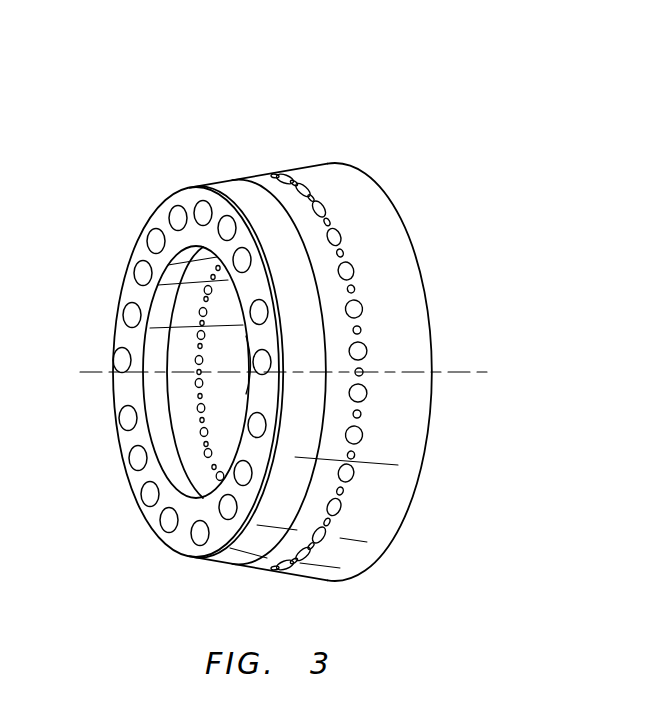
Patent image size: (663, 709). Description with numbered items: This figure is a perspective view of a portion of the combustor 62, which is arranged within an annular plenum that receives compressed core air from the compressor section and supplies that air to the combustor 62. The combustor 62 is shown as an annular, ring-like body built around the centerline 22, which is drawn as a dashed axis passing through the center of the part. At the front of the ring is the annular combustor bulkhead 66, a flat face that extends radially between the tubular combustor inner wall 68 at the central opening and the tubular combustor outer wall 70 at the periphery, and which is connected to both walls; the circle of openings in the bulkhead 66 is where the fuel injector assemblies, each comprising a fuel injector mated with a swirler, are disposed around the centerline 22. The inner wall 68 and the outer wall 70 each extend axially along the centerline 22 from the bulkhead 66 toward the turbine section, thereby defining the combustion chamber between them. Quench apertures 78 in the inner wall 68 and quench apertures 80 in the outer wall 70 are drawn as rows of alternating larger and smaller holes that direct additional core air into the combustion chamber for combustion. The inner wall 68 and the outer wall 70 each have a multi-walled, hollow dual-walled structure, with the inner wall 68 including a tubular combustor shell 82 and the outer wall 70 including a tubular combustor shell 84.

The centerline 22 is at (482, 372).
The combustor 62 is at (370, 176).
The annular combustor bulkhead 66 is at (131, 260).
The tubular combustor inner wall 68 is at (166, 438).
The tubular combustor outer wall 70 is at (383, 218).
The quench apertures 78 is at (195, 361).
The quench apertures 80 is at (360, 306).
The tubular combustor shell 82 is at (172, 467).
The tubular combustor shell 84 is at (341, 173).